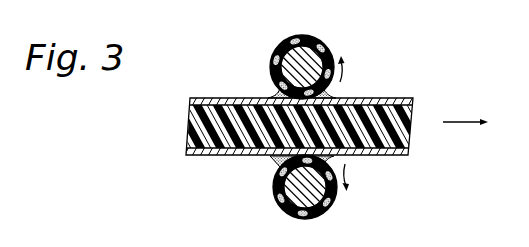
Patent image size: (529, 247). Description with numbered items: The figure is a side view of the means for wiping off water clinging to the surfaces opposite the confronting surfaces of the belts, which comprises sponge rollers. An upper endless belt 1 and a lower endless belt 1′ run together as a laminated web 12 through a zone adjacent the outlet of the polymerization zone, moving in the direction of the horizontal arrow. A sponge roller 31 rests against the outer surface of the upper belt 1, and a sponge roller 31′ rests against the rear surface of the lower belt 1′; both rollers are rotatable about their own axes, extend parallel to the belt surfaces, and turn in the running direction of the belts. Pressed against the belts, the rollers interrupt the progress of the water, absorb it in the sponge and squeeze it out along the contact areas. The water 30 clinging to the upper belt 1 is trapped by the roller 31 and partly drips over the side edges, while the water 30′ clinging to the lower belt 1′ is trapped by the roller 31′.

The upper endless belt 1 is at (303, 78).
The lower endless belt 1' is at (304, 168).
The laminated web 12 is at (205, 113).
The water 30 is at (283, 72).
The water 30' is at (278, 183).
The sponge roller 31 is at (328, 63).
The sponge roller 31' is at (329, 194).